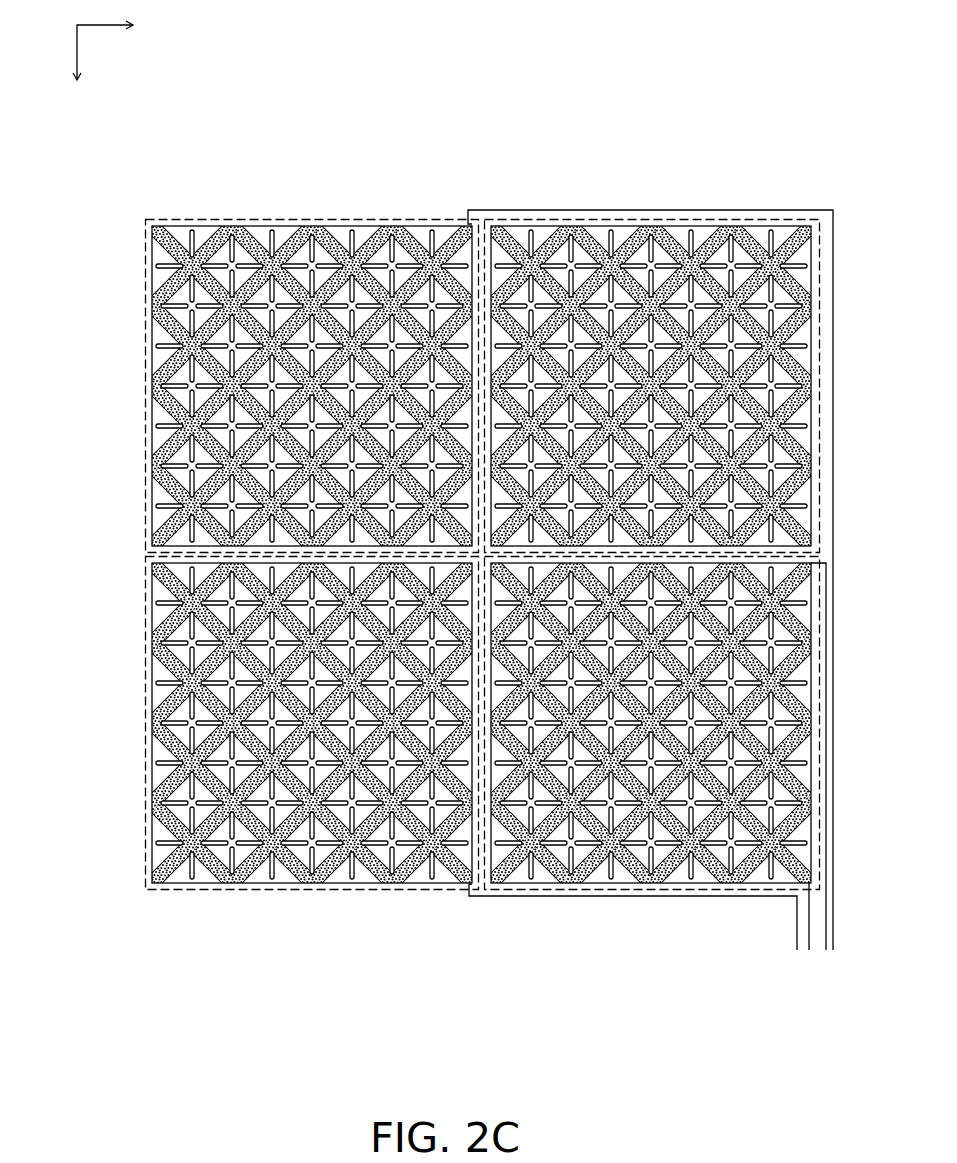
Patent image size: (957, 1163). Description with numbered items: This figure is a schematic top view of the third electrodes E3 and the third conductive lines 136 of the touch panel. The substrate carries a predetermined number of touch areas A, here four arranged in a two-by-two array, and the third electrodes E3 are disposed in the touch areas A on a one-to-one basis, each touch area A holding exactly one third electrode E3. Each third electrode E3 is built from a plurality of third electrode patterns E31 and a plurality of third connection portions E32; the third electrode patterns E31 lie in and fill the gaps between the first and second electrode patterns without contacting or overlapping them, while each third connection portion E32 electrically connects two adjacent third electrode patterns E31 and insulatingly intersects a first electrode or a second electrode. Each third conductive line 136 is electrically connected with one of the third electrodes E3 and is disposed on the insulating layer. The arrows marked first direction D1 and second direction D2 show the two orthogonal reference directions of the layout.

The third electrode E3 is at (478, 581).
The third electrode pattern E31 is at (213, 290).
The third connection portion E32 is at (233, 345).
The touch area A is at (146, 221).
The third conductive line 136 is at (797, 957).
The first direction D1 is at (134, 99).
The second direction D2 is at (207, 46).